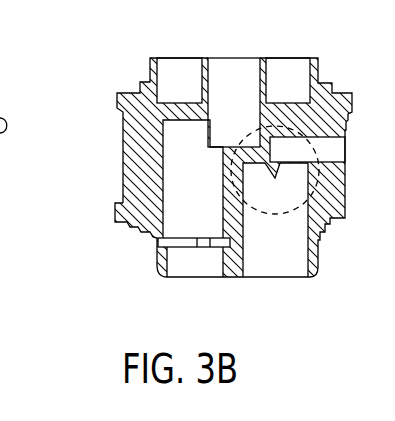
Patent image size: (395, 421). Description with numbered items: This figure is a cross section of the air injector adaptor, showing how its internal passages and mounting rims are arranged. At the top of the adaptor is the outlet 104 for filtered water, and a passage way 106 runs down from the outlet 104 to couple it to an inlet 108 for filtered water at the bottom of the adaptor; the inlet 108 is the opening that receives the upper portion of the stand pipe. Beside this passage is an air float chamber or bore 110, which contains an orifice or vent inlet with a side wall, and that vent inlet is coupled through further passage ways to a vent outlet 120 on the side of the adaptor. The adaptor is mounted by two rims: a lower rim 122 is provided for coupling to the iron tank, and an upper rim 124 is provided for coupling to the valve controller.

The outlet 104 is at (230, 78).
The passage way 106 is at (177, 158).
The inlet 108 is at (183, 265).
The air float chamber or bore 110 is at (270, 265).
The vent outlet 120 is at (348, 125).
The lower rim 122 is at (117, 223).
The upper rim 124 is at (117, 94).